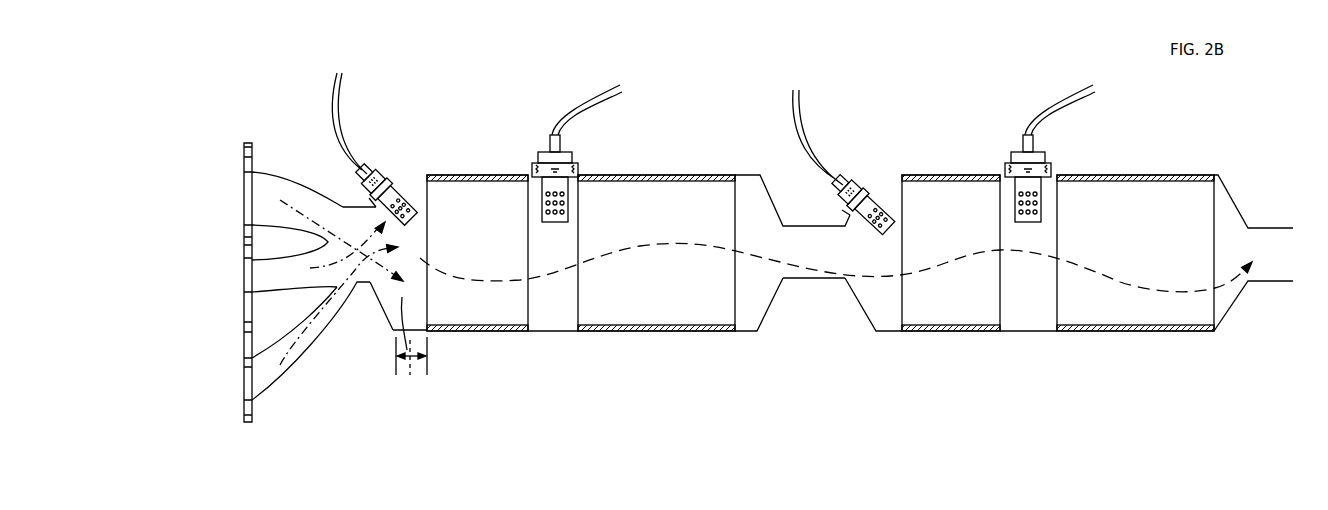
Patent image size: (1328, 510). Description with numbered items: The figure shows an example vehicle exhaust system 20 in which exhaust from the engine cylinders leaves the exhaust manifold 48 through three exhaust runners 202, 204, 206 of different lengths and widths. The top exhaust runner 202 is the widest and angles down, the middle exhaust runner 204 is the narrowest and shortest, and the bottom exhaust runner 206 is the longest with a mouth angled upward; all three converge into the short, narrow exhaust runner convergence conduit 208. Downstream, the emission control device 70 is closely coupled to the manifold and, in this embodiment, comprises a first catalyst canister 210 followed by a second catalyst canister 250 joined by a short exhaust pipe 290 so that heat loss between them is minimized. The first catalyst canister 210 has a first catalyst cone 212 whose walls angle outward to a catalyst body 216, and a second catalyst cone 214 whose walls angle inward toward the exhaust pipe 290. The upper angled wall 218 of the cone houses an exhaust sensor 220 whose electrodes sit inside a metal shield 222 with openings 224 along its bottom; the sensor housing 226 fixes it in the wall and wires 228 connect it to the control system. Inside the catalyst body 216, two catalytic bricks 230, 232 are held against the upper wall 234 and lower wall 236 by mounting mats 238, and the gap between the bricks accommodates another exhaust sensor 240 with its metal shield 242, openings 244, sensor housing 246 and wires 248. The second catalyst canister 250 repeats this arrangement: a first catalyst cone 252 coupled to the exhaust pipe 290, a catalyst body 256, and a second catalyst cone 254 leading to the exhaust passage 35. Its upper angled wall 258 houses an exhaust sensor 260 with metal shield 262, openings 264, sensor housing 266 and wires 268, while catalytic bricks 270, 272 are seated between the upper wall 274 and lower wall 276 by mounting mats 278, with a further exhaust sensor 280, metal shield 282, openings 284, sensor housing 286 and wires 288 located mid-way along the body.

The vehicle exhaust system 20 is at (249, 230).
The exhaust manifold 48 is at (213, 281).
The exhaust runner 202 is at (314, 189).
The exhaust runner 204 is at (294, 258).
The exhaust runner 206 is at (311, 341).
The exhaust runner convergence conduit 208 is at (391, 315).
The first catalyst cone 212 is at (390, 326).
The upper angled wall 218 is at (390, 174).
The exhaust sensor 220 is at (368, 169).
The metal shield 222 is at (384, 181).
The openings 224 is at (401, 207).
The sensor housing 226 is at (369, 198).
The wires 228 is at (343, 140).
The first catalyst brick 230 is at (477, 253).
The second catalyst brick 232 is at (656, 253).
The upper wall 234 is at (753, 175).
The lower wall 236 is at (731, 332).
The mounting mats 238 is at (458, 175).
The exhaust sensor 240 is at (549, 142).
The metal shield 242 is at (524, 164).
The openings 244 is at (551, 212).
The sensor housing 246 is at (572, 162).
The wires 248 is at (587, 101).
The second catalyst canister 250 is at (706, 337).
The first catalyst cone 252 is at (866, 305).
The second catalyst cone 254 is at (1230, 292).
The catalyst body 256 is at (1030, 332).
The upper angled wall 258 is at (863, 177).
The exhaust sensor 260 is at (844, 180).
The metal shield 262 is at (860, 186).
The openings 264 is at (877, 204).
The sensor housing 266 is at (842, 210).
The wires 268 is at (806, 108).
The first catalyst brick 270 is at (951, 253).
The second catalyst brick 272 is at (1135, 253).
The upper wall 274 is at (1190, 175).
The lower wall 276 is at (1190, 331).
The mounting mats 278 is at (940, 175).
The exhaust sensor 280 is at (1018, 142).
The metal shield 282 is at (992, 164).
The openings 284 is at (1029, 212).
The sensor housing 286 is at (1042, 162).
The wires 288 is at (1060, 101).
The short exhaust pipe 290 is at (797, 270).
The catalyst canister 210 is at (548, 262).
The second catalyst cone 214 is at (768, 312).
The catalyst body 216 is at (553, 332).
The exhaust passage 35 is at (1248, 240).
The emission control device 70 is at (938, 77).